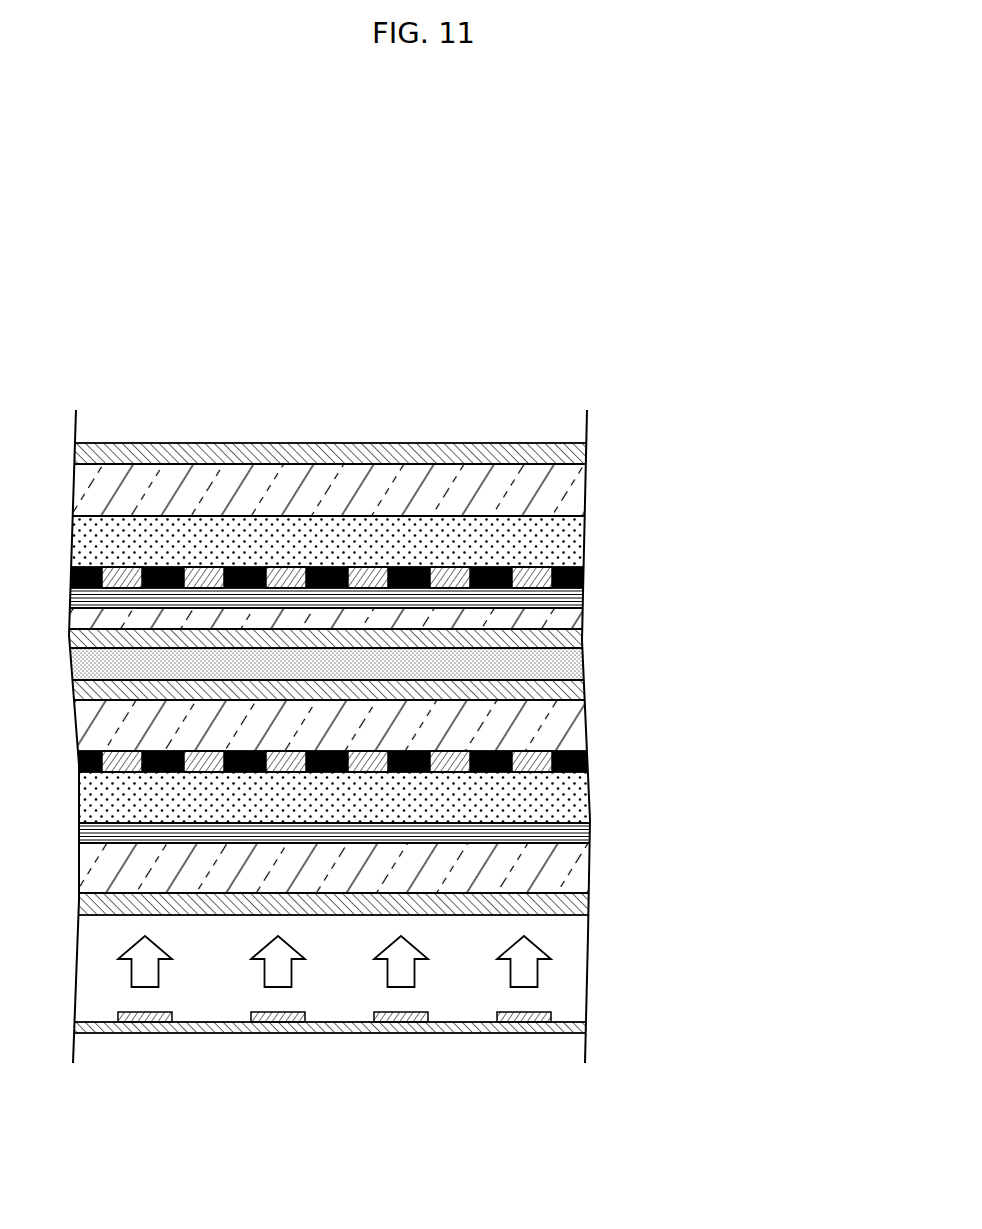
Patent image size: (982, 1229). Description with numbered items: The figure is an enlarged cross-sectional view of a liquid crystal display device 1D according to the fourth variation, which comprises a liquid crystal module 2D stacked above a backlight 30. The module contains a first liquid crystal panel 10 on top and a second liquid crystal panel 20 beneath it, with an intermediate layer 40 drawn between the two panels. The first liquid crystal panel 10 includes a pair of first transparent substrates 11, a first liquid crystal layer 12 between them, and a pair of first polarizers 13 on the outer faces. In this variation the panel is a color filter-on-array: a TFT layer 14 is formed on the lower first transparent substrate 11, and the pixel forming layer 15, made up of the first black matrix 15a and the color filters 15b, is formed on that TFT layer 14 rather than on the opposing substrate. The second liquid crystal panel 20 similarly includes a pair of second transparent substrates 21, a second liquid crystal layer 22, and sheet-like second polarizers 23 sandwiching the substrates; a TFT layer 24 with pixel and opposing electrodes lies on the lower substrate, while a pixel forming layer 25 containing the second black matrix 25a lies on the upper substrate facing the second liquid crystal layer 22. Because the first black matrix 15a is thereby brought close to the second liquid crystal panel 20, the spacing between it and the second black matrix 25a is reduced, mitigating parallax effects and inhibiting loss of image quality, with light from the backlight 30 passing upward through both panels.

The liquid crystal display device 1D is at (658, 372).
The liquid crystal module 2D is at (762, 517).
The first liquid crystal panel 10 is at (712, 430).
The first transparent substrates 11 is at (576, 486).
The first liquid crystal layer 12 is at (578, 530).
The first polarizers 13 is at (586, 455).
The TFT layer 14 is at (585, 600).
The pixel forming layer 15 is at (661, 523).
The first black matrix 15a is at (568, 565).
The color filters 15b is at (534, 564).
The second liquid crystal panel 20 is at (712, 678).
The second transparent substrates 21 is at (580, 726).
The second liquid crystal layer 22 is at (588, 808).
The second polarizers 23 is at (583, 691).
The TFT layer 24 is at (585, 830).
The pixel forming layer 25 is at (588, 760).
The second black matrix 25a is at (568, 773).
The backlight 30 is at (562, 1012).
The adhesive / diffusion layer 40 is at (580, 664).